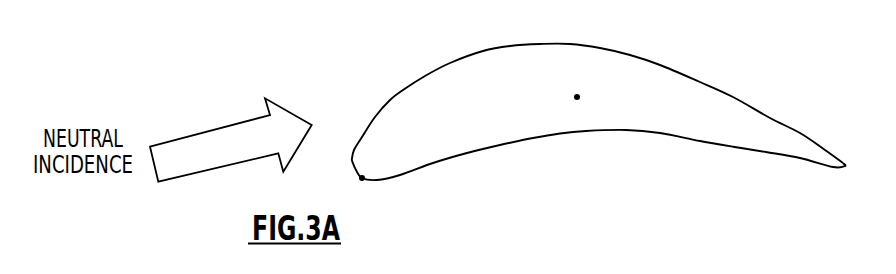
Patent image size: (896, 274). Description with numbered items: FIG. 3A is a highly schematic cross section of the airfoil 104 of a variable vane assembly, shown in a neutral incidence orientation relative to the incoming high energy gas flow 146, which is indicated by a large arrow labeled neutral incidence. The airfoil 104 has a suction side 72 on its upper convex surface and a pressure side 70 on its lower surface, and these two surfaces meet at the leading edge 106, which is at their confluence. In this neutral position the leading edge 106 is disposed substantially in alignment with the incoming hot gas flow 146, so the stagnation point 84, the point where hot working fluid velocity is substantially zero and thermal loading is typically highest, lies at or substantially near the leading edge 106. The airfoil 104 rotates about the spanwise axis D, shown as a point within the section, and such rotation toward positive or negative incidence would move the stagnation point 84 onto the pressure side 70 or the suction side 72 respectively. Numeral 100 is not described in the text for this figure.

The airfoil 100 is at (590, 107).
The suction side 72 is at (483, 50).
The pressure side 70 is at (537, 140).
The airfoil 104 is at (719, 61).
The leading edge 106 is at (350, 162).
The stagnation point 84 is at (362, 182).
The high energy gas flow 146 is at (193, 157).
The spanwise axis D is at (584, 91).